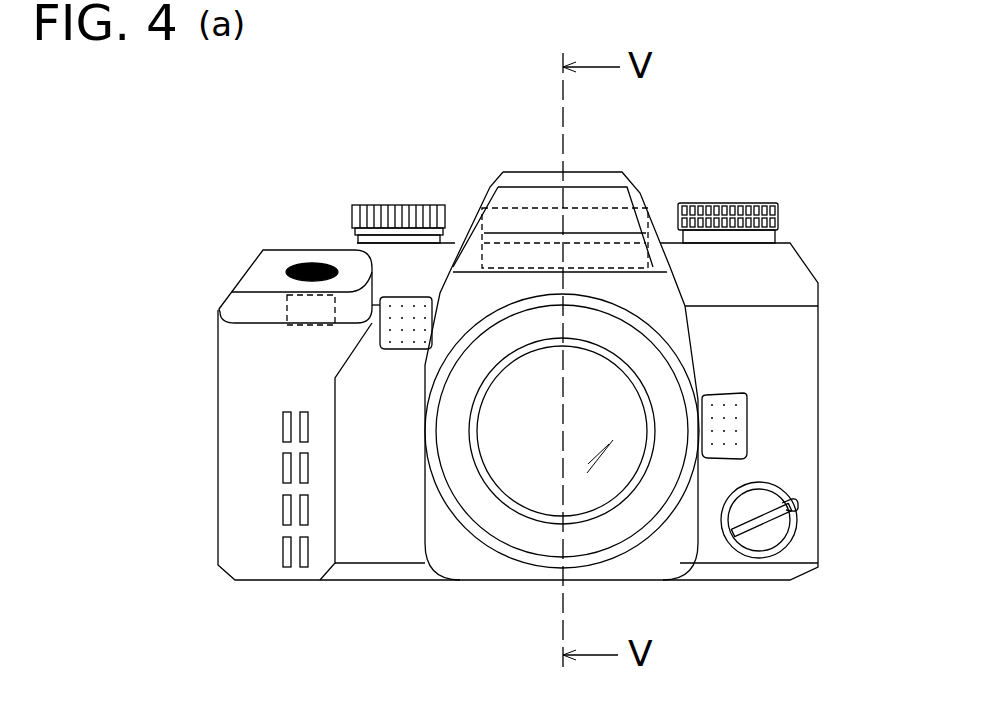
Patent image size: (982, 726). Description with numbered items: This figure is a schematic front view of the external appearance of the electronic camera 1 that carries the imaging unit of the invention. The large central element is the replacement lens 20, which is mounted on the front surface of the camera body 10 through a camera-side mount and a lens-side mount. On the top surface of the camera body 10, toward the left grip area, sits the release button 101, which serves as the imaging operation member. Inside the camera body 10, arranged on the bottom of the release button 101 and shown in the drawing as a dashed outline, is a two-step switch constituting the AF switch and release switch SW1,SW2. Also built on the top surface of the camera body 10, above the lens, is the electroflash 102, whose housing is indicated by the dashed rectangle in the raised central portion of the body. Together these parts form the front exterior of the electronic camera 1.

The electronic camera 1 is at (769, 166).
The camera body 10 is at (792, 317).
The replacement lens 20 is at (595, 495).
The release button 101 is at (312, 263).
The electroflash 102 is at (597, 217).
The AF switch and release switch SW1,SW2 is at (292, 310).